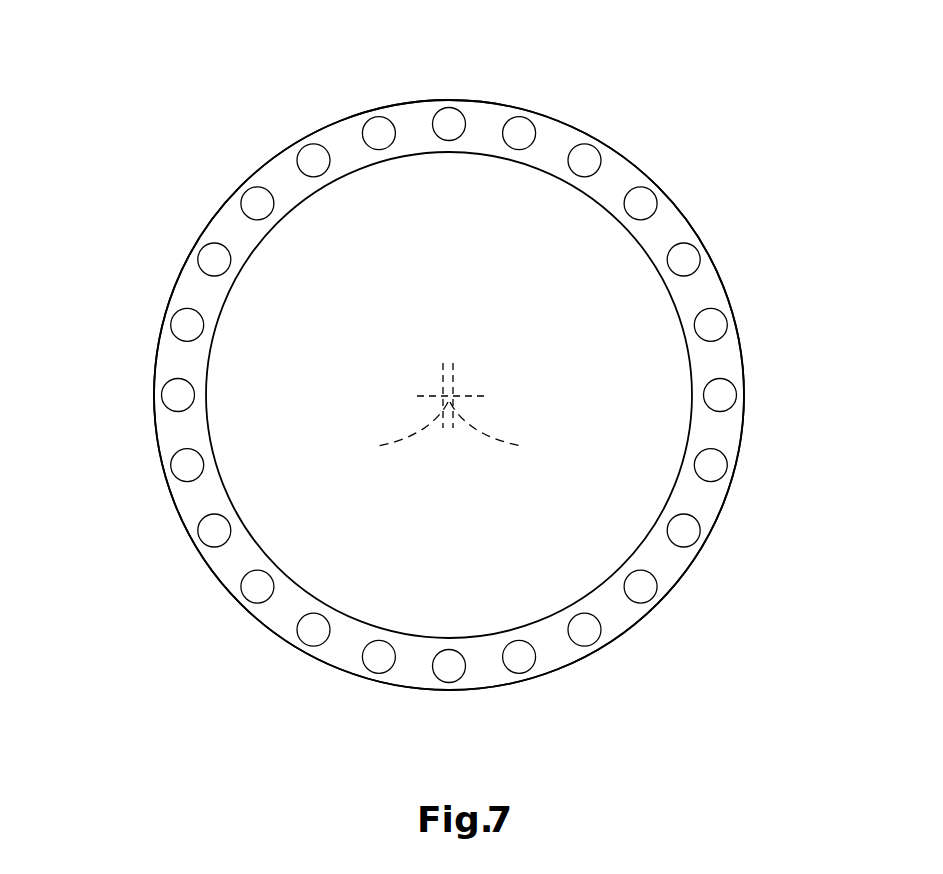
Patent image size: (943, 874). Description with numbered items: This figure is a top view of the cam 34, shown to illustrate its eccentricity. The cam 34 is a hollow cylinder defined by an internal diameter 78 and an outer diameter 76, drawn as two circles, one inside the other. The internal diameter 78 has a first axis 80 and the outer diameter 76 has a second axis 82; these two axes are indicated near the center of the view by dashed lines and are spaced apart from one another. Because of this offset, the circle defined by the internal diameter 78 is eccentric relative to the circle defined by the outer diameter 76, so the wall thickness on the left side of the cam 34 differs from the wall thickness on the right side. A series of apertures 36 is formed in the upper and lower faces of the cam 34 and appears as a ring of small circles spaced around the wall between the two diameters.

The cam 34 is at (712, 162).
The apertures 36 is at (175, 465).
The outer diameter 76 is at (445, 99).
The internal diameter 78 is at (213, 368).
The first axis 80 is at (488, 413).
The second axis 82 is at (390, 433).